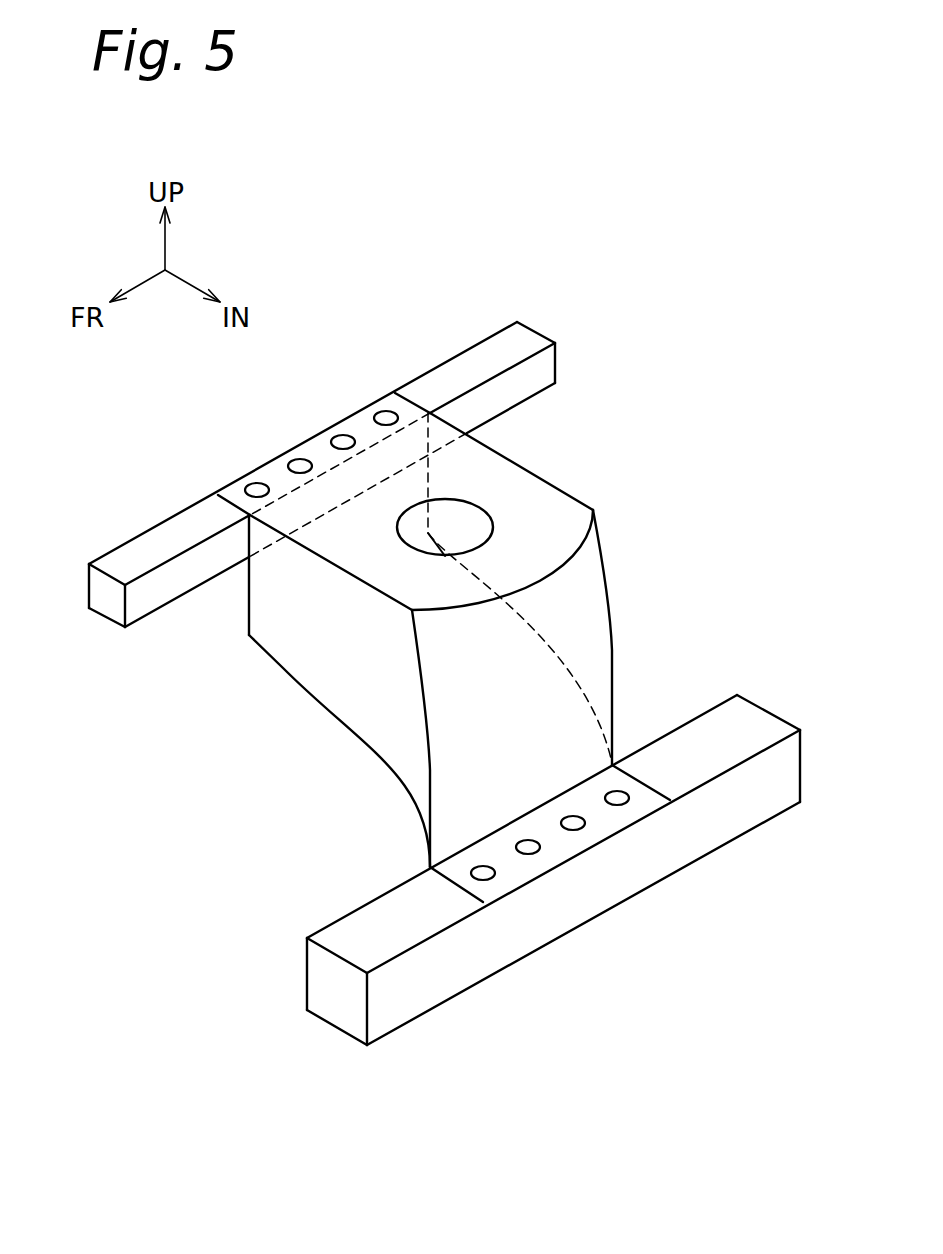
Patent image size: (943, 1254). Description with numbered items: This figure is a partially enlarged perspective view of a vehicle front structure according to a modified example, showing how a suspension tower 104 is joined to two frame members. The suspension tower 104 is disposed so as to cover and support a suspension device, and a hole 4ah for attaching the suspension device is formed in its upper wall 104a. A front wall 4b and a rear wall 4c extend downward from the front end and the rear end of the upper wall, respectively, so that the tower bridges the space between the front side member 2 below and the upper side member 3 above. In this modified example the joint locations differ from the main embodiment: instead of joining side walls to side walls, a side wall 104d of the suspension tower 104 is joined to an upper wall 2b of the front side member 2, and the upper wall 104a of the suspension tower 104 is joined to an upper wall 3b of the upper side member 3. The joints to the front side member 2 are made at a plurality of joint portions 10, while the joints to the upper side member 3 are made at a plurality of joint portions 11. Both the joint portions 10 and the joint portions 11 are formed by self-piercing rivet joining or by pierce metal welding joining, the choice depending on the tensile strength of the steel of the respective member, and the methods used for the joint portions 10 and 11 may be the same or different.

The front side member 2 is at (550, 874).
The upper wall of the front side member 2b is at (402, 913).
The upper side member 3 is at (322, 474).
The upper wall of the upper side member 3b is at (163, 538).
The joint portions 10 is at (496, 872).
The joint portions 11 is at (257, 484).
The suspension tower 104 is at (479, 638).
The upper wall of the suspension tower 104a is at (437, 458).
The side wall of the suspension tower 104d is at (585, 795).
The hole 4ah is at (460, 505).
The front wall 4b is at (300, 657).
The rear wall 4c is at (573, 612).